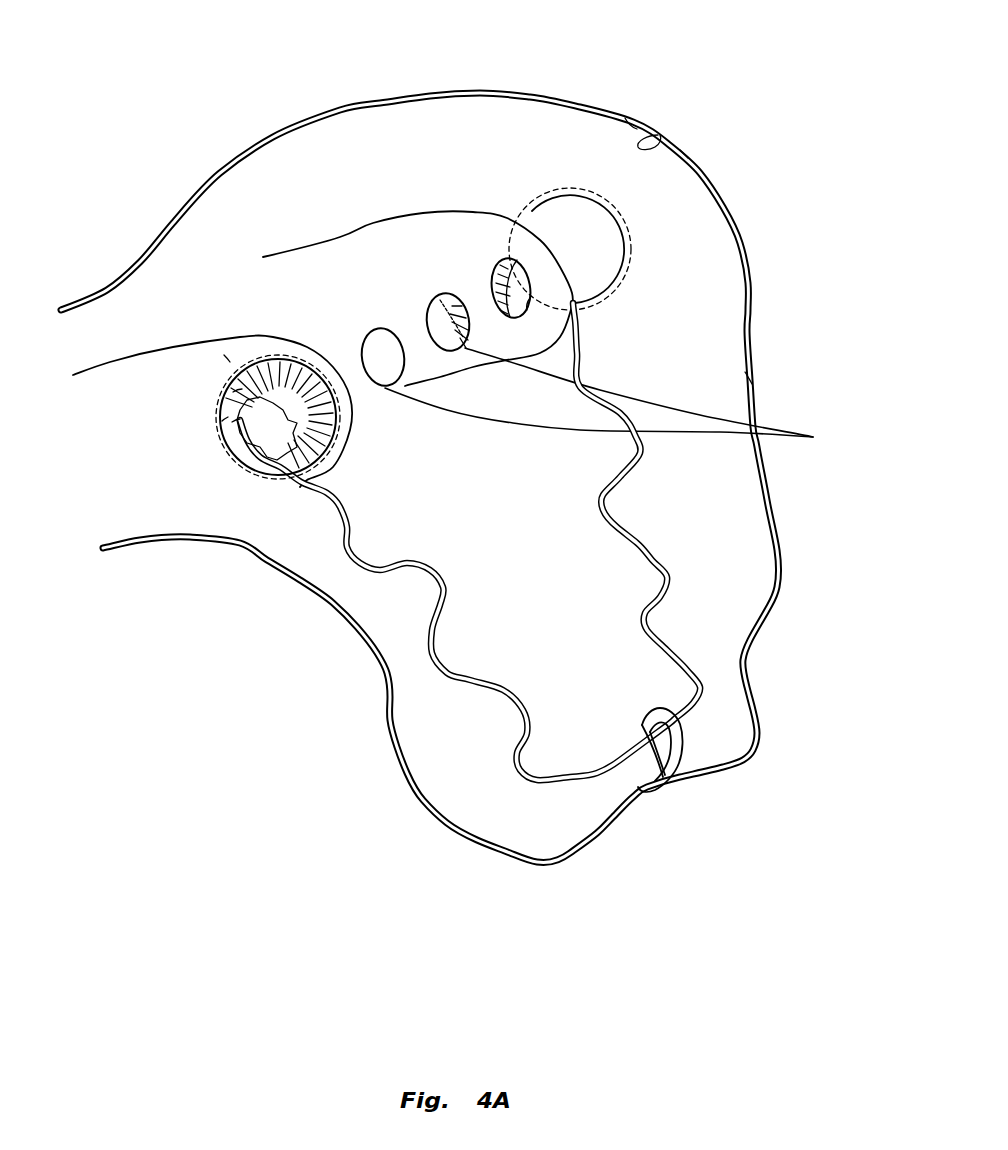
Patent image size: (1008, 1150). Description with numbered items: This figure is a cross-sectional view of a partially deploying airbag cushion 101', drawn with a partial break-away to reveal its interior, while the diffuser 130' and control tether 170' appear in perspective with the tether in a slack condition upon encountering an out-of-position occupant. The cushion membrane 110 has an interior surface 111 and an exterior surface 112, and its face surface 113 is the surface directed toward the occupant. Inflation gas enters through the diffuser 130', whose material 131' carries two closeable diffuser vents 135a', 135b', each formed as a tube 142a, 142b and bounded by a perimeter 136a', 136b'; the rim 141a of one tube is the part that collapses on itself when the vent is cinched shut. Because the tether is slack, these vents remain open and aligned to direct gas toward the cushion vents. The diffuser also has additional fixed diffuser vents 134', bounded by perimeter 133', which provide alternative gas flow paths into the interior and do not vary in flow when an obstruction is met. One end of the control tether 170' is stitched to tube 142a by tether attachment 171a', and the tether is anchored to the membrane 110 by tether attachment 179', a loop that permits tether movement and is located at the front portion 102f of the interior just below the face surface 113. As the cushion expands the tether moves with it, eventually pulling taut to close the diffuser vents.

The airbag cushion 101' is at (420, 452).
The membrane 110 is at (630, 120).
The interior surface of airbag cushion membrane 111 is at (657, 130).
The exterior surface of the airbag cushion membrane 112 is at (683, 153).
The face surface 113 is at (750, 380).
The material 131' is at (323, 260).
The diffuser 130' is at (644, 238).
The additional fixed diffuser vents 134' is at (415, 197).
The diffuser vent 135b' is at (651, 266).
The tube of diffuser vent 142b is at (530, 298).
The perimeter of diffuser vent 136b' is at (597, 373).
The perimeter of direct opening 133' is at (623, 398).
The front portion of interior 102f is at (716, 490).
The control tether 170' is at (470, 565).
The tether attachment 179' is at (721, 762).
The diffuser vent 135a' is at (278, 518).
The rim or diameter of diffuser tube 141a is at (230, 362).
The tube of diffuser vent 142a is at (233, 392).
The perimeter of diffuser vent 136a' is at (158, 508).
The tether attachment 171a' is at (190, 541).